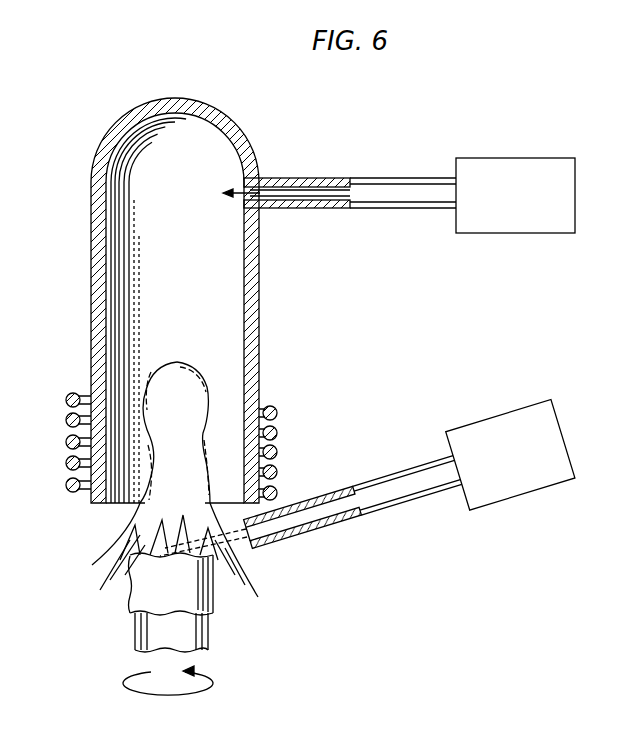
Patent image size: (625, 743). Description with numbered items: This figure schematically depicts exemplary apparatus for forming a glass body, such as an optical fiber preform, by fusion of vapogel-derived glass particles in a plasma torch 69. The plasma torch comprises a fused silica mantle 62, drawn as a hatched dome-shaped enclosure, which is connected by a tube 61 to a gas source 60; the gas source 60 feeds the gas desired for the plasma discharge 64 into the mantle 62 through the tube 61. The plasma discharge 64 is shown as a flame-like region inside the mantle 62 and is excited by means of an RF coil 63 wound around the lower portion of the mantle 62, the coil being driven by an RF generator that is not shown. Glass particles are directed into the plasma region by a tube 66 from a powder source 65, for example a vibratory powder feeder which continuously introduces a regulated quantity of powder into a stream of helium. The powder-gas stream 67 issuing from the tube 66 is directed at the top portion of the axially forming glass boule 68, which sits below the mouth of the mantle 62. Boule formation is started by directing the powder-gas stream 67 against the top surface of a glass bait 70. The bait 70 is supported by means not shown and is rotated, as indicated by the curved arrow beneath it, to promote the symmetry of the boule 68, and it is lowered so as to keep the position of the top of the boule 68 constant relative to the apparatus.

The gas source 60 is at (511, 158).
The tube 61 is at (330, 178).
The fused silica mantle 62 is at (91, 287).
The RF coil 63 is at (66, 400).
The plasma discharge 64 is at (186, 362).
The powder source 65 is at (490, 418).
The tube 66 is at (340, 522).
The powder-gas stream 67 is at (241, 546).
The glass boule 68 is at (130, 592).
The plasma torch 69 is at (46, 199).
The glass bait 70 is at (208, 630).